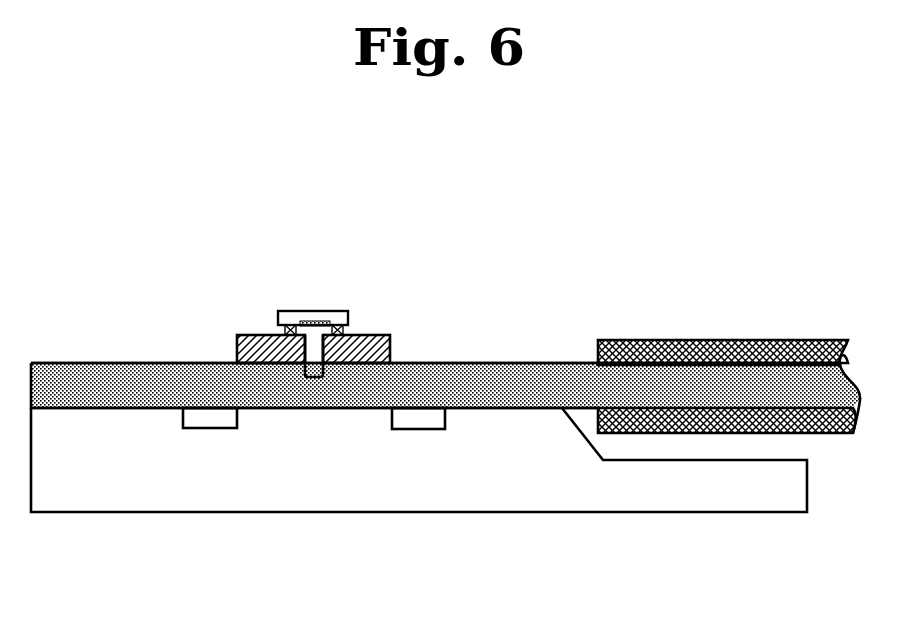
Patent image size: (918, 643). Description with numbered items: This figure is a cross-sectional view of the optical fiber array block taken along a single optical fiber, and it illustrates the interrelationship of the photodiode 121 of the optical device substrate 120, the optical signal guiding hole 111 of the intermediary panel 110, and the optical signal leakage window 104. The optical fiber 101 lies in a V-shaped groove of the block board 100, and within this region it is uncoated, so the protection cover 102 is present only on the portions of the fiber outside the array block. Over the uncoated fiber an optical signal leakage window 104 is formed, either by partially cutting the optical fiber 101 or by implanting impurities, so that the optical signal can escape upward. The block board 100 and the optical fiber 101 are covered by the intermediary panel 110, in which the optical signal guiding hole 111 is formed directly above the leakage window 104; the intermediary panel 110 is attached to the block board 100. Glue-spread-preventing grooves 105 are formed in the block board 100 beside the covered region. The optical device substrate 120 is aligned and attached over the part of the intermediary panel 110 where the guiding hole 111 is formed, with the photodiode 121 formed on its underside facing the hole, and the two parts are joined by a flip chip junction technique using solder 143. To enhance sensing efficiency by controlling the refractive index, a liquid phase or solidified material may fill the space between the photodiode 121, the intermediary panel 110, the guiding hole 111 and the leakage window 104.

The block board 100 is at (488, 480).
The optical fiber 101 is at (503, 363).
The protection cover 102 is at (706, 340).
The optical signal leakage window 104 is at (311, 378).
The glue-spread-preventing groove 105 is at (207, 430).
The intermediary panel 110 is at (232, 340).
The optical signal guiding hole 111 is at (323, 322).
The optical device substrate 120 is at (278, 318).
The photodiode 121 is at (312, 342).
The solder 143 is at (347, 329).